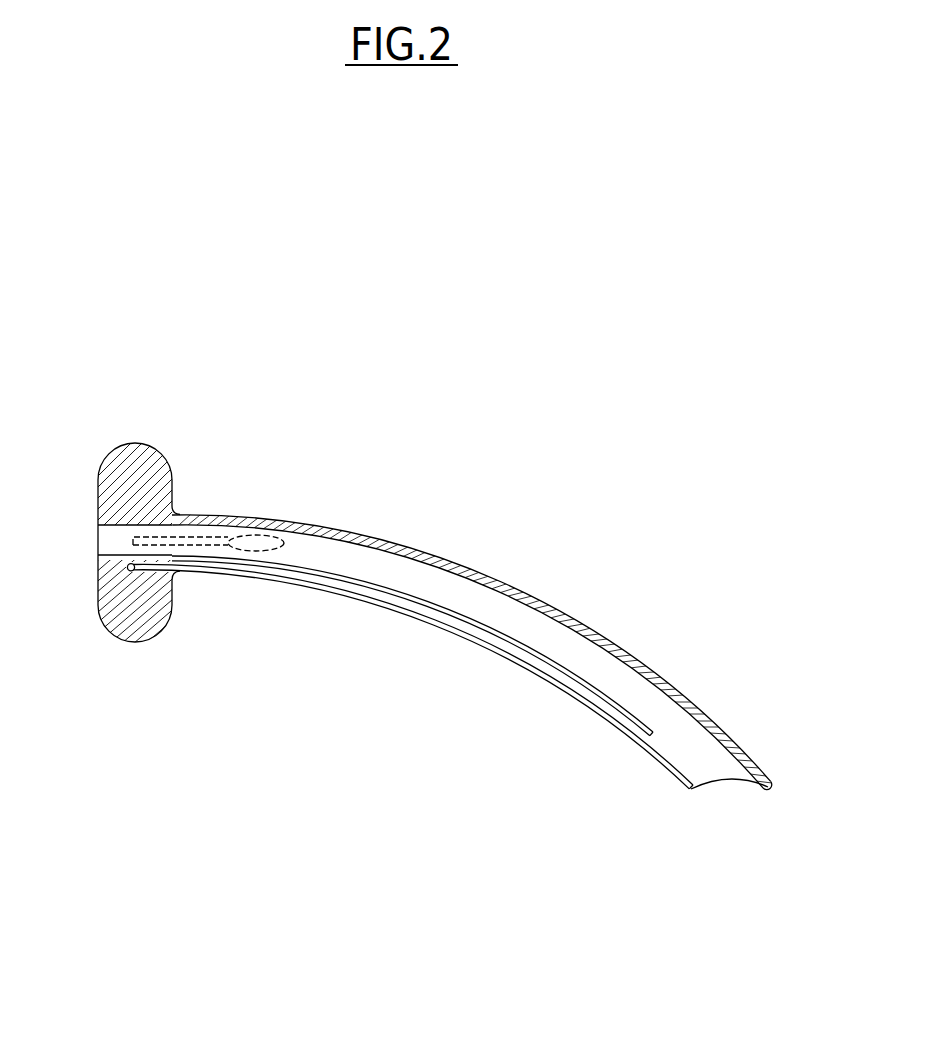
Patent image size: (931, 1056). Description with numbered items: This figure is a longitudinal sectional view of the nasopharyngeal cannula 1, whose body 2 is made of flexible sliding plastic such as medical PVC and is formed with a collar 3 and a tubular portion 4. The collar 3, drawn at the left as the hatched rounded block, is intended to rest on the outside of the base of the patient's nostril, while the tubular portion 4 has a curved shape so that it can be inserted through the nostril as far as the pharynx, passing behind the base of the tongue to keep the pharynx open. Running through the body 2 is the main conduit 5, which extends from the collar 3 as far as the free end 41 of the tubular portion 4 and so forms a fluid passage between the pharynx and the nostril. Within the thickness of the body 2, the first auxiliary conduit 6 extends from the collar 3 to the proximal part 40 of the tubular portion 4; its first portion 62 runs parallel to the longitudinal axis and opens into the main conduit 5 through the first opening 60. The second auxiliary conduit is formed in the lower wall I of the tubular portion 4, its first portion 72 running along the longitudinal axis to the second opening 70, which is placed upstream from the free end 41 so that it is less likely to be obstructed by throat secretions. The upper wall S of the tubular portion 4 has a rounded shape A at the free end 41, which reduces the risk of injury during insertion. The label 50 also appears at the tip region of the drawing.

The nasopharyngeal cannula 1 is at (121, 374).
The body 2 is at (351, 500).
The collar 3 is at (133, 645).
The tubular portion 4 is at (529, 838).
The main conduit 5 is at (96, 540).
The first auxiliary conduit 6 is at (222, 545).
The proximal part 40 is at (246, 480).
The free end 41 is at (785, 766).
The tip surface 50 is at (728, 800).
The first opening 60 is at (257, 551).
The first portion 62 is at (193, 537).
The second opening 70 is at (664, 730).
The first portion 72 is at (369, 594).
The upper wall S is at (472, 570).
The lower wall I is at (487, 643).
The rounded shape A is at (788, 800).